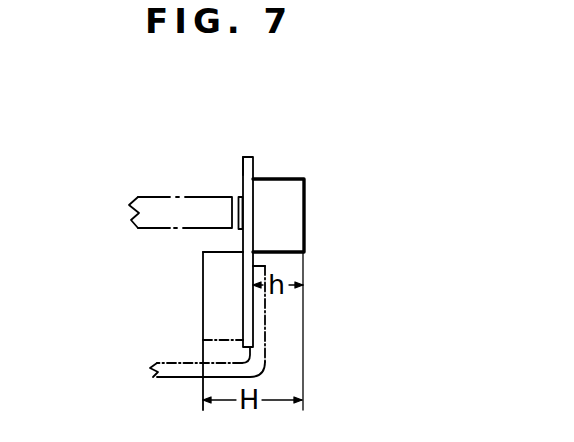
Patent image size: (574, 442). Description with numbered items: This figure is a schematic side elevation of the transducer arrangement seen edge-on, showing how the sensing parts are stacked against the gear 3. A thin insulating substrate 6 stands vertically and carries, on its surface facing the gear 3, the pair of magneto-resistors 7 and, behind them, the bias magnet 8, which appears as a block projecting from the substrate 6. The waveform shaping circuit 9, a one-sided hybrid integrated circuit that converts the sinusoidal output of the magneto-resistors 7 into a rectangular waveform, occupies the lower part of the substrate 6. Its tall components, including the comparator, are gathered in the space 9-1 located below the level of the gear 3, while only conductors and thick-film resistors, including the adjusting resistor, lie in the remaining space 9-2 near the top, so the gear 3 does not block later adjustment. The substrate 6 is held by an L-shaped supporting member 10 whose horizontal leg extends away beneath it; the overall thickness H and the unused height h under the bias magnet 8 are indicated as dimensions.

The gear 3 is at (153, 197).
The substrate 6 is at (252, 157).
The magneto-resistor pair 7 is at (239, 196).
The bias magnet 8 is at (297, 220).
The waveform shaping circuit 9 is at (203, 283).
The space 9-1 is at (243, 316).
The remaining space 9-2 is at (243, 163).
The L-shaped supporting member 10 is at (190, 378).